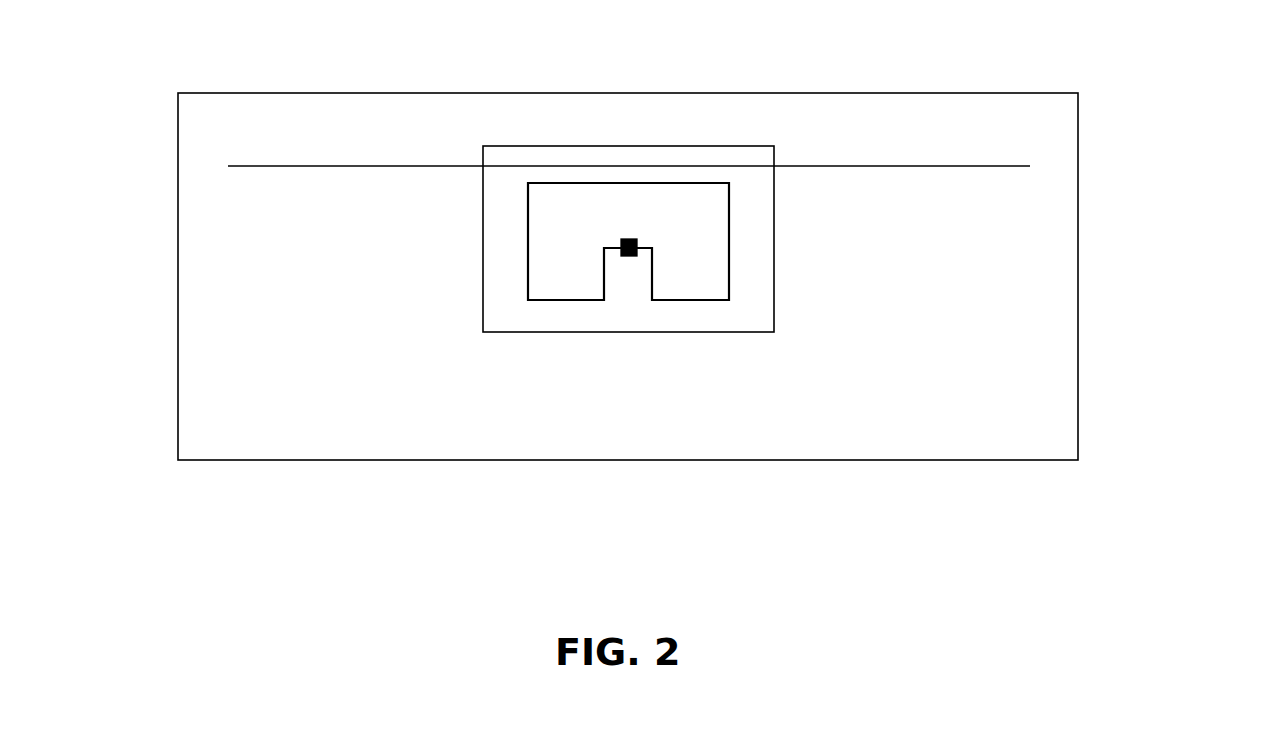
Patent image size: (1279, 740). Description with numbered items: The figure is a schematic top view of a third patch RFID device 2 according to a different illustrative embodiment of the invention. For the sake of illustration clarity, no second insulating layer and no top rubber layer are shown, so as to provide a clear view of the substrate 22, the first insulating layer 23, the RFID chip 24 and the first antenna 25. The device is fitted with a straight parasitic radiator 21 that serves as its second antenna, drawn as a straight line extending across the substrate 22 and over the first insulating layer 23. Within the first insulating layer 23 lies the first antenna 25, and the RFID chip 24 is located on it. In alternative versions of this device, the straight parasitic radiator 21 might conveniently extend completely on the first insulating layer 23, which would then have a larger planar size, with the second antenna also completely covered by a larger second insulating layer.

The third patch RFID device 2 is at (1172, 98).
The straight parasitic radiator 21 is at (305, 167).
The substrate 22 is at (224, 449).
The first insulating layer 23 is at (492, 152).
The RFID chip 24 is at (621, 243).
The first antenna 25 is at (688, 185).